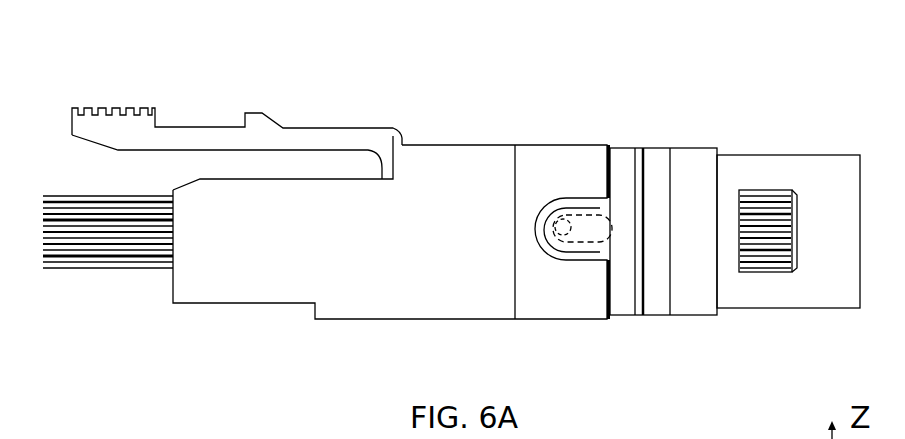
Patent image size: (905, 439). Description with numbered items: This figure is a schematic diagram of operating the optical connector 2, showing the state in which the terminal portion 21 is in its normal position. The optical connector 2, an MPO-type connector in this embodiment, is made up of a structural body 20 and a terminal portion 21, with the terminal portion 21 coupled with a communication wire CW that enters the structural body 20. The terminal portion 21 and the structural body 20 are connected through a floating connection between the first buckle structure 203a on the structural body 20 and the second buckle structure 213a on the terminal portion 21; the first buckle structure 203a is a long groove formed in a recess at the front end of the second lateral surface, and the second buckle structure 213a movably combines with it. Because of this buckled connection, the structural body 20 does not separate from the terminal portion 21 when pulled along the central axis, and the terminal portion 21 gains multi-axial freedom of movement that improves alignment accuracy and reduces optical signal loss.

The optical connector 2 is at (400, 115).
The structural body 20 is at (493, 150).
The terminal portion 21 is at (813, 148).
The second buckle structure 213a is at (568, 208).
The first buckle structure 203a is at (590, 243).
The communication wire CW is at (75, 240).